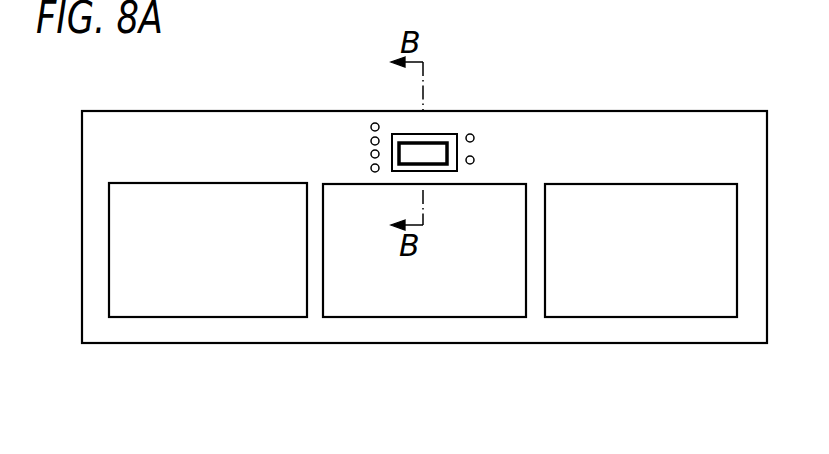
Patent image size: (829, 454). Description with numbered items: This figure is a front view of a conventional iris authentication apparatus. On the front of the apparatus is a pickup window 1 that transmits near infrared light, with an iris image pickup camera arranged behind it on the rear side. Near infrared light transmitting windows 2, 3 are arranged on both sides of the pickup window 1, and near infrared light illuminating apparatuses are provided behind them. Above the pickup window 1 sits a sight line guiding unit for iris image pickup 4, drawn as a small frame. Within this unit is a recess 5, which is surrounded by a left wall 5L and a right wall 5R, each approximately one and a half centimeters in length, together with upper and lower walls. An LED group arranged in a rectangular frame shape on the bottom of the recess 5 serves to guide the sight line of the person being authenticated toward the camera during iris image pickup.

The pickup window 1 is at (447, 301).
The near infrared light transmitting window 2 is at (233, 303).
The near infrared light transmitting window 3 is at (642, 307).
The sight line guiding unit for iris image pickup 4 is at (445, 133).
The recess 5 is at (422, 150).
The left wall 5L is at (412, 147).
The right wall 5R is at (448, 153).